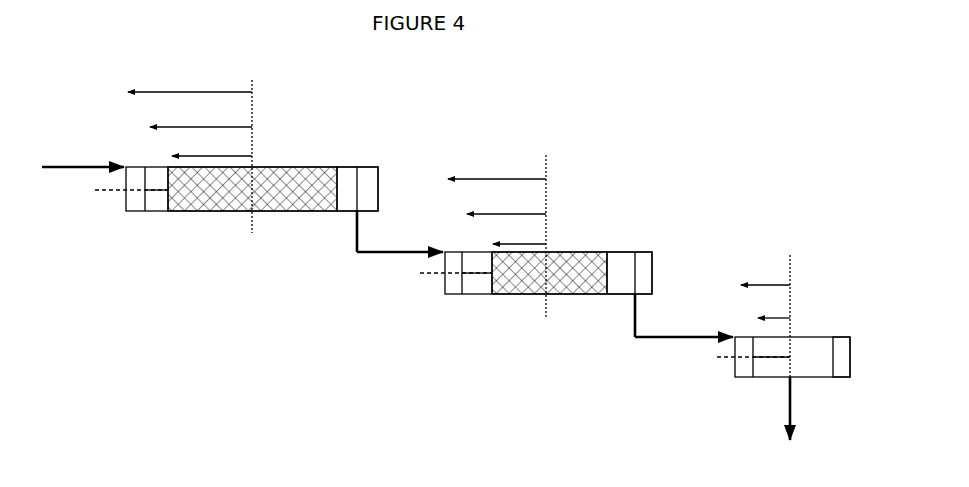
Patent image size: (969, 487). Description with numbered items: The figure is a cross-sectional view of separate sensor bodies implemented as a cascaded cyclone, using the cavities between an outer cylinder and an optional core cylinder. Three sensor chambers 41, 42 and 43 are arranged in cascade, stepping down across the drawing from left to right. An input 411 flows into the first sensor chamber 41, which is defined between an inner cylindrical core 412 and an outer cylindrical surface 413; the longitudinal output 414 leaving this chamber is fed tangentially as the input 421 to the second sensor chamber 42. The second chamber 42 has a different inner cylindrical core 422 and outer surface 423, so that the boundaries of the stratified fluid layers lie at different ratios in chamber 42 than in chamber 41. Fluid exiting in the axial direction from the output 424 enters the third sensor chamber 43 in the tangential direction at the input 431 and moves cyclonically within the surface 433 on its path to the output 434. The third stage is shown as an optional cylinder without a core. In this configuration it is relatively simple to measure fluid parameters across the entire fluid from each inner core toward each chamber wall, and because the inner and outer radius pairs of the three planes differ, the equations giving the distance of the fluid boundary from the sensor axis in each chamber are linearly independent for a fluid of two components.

The sensor chamber 41 is at (218, 213).
The input 411 is at (60, 172).
The inner cylindrical core 412 is at (280, 165).
The outer cylindrical surface 413 is at (381, 176).
The longitudinal output 414 is at (351, 230).
The sensor chamber 42 is at (515, 297).
The input 421 is at (375, 256).
The inner cylindrical core 422 is at (584, 250).
The outer surface 423 is at (653, 254).
The output 424 is at (627, 306).
The sensor chamber 43 is at (823, 380).
The input 431 is at (679, 341).
The surface 433 is at (852, 335).
The output 434 is at (782, 405).